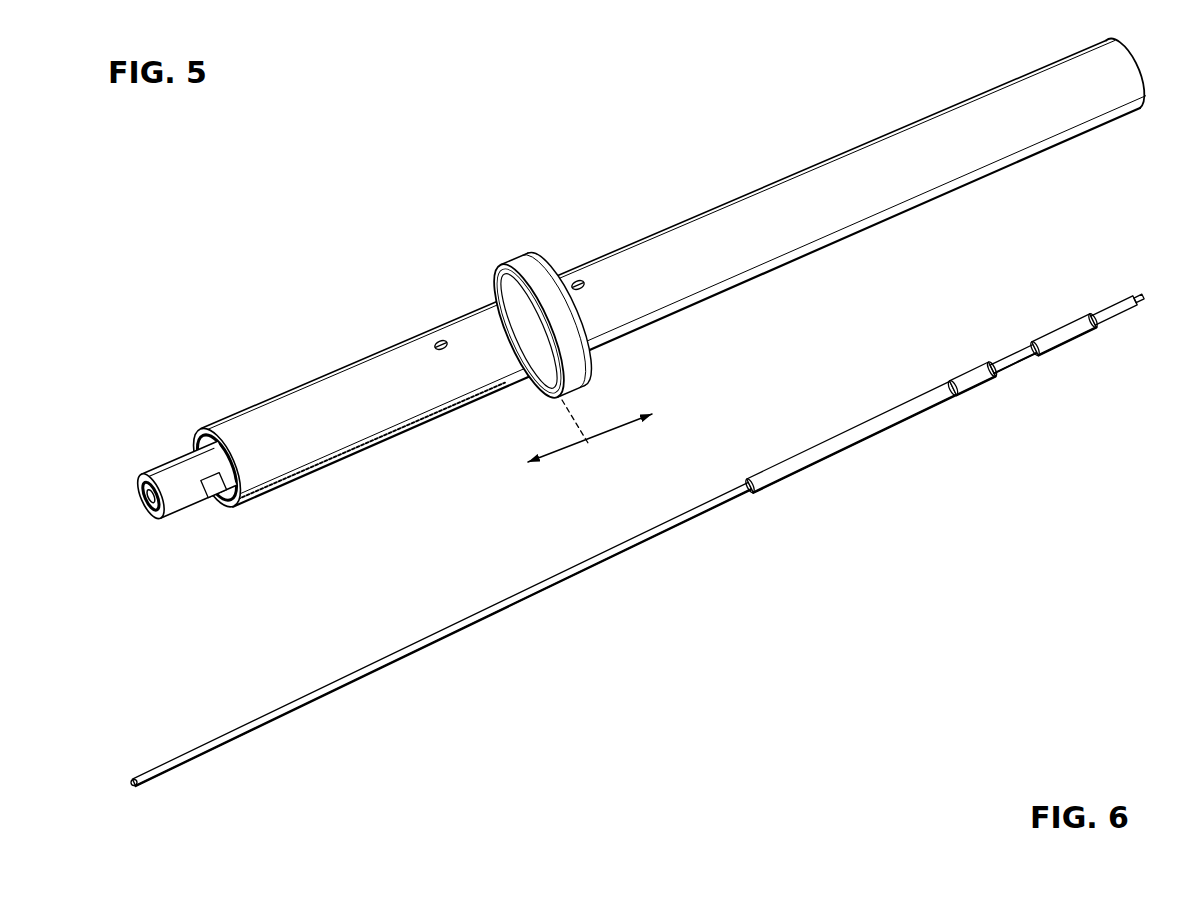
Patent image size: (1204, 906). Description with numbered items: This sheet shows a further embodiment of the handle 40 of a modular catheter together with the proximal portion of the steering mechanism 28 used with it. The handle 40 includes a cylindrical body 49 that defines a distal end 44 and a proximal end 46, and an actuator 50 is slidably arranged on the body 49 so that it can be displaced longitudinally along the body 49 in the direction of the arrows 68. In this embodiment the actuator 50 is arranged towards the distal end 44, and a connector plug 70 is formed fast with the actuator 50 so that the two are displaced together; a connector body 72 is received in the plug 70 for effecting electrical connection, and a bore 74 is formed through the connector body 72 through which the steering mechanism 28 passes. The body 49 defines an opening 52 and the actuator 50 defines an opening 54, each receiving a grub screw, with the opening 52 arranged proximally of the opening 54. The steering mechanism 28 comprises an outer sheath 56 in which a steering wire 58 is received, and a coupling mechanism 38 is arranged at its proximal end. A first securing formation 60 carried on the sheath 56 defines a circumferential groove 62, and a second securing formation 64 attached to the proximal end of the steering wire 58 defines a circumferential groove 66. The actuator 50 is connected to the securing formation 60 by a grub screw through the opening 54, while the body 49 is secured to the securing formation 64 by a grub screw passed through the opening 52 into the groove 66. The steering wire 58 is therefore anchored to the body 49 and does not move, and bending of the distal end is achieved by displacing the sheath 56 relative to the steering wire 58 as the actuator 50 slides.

In FIG. 6, the steering mechanism 28 is at (650, 540).
In FIG. 6, the coupling mechanism 38 is at (650, 540).
In FIG. 5, the handle 40 is at (640, 317).
In FIG. 5, the distal end 44 is at (195, 471).
In FIG. 5, the proximal end 46 is at (1152, 114).
In FIG. 5, the cylindrical body 49 is at (690, 218).
In FIG. 5, the actuator 50 is at (348, 363).
In FIG. 5, the opening 52 is at (582, 279).
In FIG. 5, the opening 54 is at (440, 340).
In FIG. 6, the outer sheath 56 is at (522, 597).
In FIG. 6, the steering wire 58 is at (1020, 367).
In FIG. 6, the first securing formation 60 is at (816, 455).
In FIG. 6, the groove 62 is at (956, 397).
In FIG. 6, the second securing formation 64 is at (1078, 334).
In FIG. 6, the groove 66 is at (1098, 327).
In FIG. 5, the arrows 68 is at (592, 440).
In FIG. 5, the connector plug 70 is at (207, 492).
In FIG. 5, the connector body 72 is at (163, 508).
In FIG. 5, the bore 74 is at (148, 492).